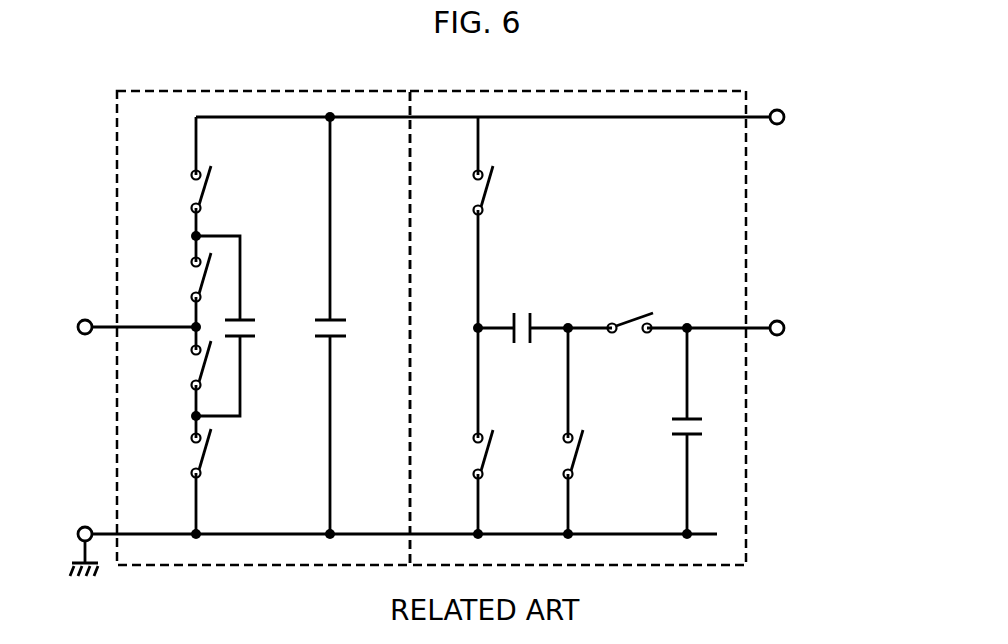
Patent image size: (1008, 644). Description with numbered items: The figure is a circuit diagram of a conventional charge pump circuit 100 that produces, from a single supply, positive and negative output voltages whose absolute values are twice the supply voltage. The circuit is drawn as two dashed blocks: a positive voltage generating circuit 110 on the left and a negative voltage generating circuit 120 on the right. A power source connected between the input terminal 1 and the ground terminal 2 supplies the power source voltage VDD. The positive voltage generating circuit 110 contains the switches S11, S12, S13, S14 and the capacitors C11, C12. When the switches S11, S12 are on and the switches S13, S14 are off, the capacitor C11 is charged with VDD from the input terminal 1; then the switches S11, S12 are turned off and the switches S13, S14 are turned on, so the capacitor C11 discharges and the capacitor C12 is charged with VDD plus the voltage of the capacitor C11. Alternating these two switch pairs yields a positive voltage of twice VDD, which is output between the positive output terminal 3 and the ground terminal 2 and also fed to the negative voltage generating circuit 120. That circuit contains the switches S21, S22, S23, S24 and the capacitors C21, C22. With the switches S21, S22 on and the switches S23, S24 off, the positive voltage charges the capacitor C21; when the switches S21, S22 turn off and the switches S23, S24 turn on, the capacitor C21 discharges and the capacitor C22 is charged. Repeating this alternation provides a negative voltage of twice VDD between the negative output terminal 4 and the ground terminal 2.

The input terminal 1 is at (81, 321).
The ground terminal 2 is at (81, 527).
The positive output terminal 3 is at (782, 111).
The negative output terminal 4 is at (782, 322).
The charge pump circuit 100 is at (431, 294).
The positive voltage generating circuit 110 is at (264, 91).
The negative voltage generating circuit 120 is at (577, 91).
The switch S11 is at (179, 277).
The switch S12 is at (179, 453).
The switch S13 is at (179, 365).
The switch S14 is at (179, 189).
The capacitor C11 is at (241, 326).
The capacitor C12 is at (346, 325).
The switch S21 is at (504, 190).
The switch S22 is at (591, 454).
The switch S23 is at (503, 454).
The switch S24 is at (631, 336).
The capacitor C21 is at (519, 316).
The capacitor C22 is at (664, 431).